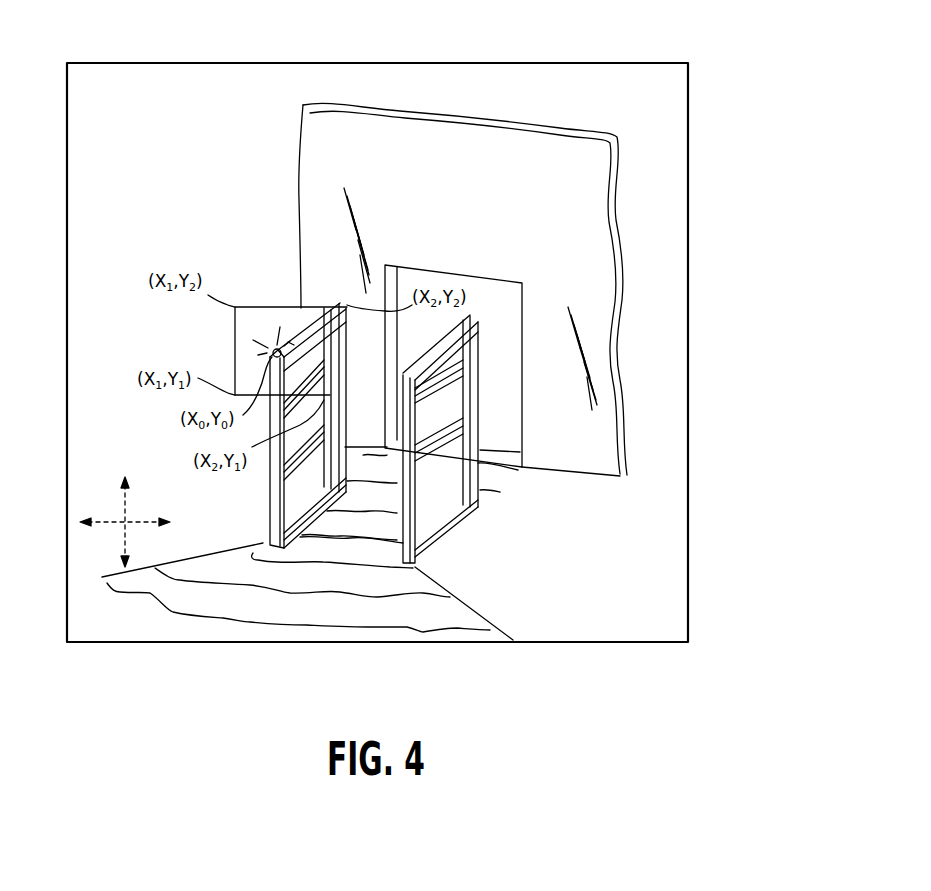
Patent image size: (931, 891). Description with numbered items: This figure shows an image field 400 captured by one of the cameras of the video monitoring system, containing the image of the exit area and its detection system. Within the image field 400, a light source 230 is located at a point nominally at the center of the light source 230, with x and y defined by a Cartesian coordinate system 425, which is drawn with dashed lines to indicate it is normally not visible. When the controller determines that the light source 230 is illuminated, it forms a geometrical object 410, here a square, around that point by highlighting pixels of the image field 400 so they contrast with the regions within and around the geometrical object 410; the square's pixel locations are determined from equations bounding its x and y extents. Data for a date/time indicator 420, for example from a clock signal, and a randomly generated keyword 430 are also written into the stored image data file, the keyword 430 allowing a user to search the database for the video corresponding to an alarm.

The image field 400 is at (688, 192).
The geometrical object 410 is at (235, 353).
The date/time indicator 420 is at (591, 82).
The Cartesian coordinate system 425 is at (105, 506).
The keyword 430 is at (300, 83).
The light source 230 is at (272, 347).